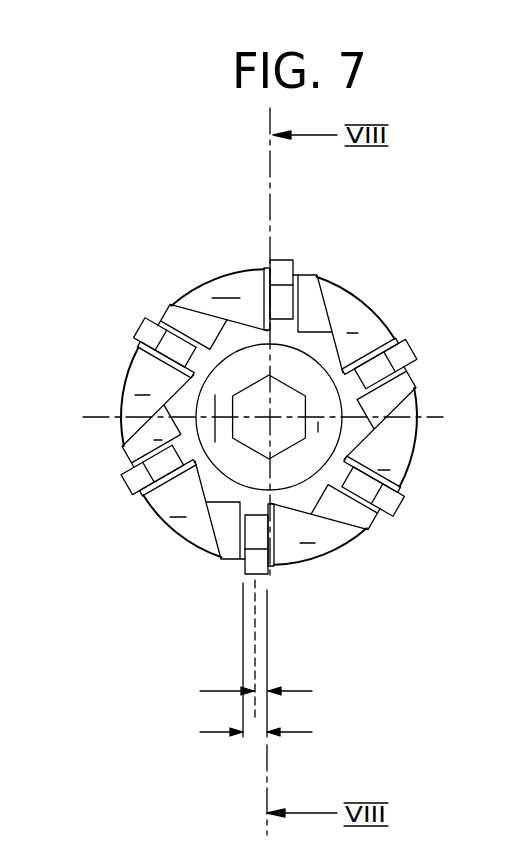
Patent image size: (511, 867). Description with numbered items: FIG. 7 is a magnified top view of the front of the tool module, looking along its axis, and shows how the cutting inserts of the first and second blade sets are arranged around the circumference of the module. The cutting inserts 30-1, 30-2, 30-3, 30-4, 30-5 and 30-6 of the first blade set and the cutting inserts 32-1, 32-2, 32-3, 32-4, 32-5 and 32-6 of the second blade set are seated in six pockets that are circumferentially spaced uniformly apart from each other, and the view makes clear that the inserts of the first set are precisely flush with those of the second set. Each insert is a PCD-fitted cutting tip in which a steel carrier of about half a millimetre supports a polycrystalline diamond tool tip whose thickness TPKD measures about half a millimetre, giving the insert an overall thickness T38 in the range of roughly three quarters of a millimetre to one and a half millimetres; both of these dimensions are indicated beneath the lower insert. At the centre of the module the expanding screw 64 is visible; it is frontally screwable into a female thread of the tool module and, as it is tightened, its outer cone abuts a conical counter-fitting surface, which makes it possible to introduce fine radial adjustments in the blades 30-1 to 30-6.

The cutting insert 30-1 is at (258, 532).
The cutting insert 30-2 is at (358, 482).
The cutting insert 30-3 is at (373, 370).
The cutting insert 30-4 is at (285, 305).
The cutting insert 30-5 is at (177, 352).
The cutting insert 30-6 is at (160, 465).
The cutting insert 32-1 is at (257, 572).
The cutting insert 32-2 is at (382, 500).
The cutting insert 32-3 is at (408, 355).
The cutting insert 32-4 is at (281, 272).
The cutting insert 32-5 is at (150, 332).
The cutting insert 32-6 is at (137, 480).
The expanding screw 64 is at (323, 402).
The thickness of PCD tool tip TPKD is at (258, 694).
The thickness of cutting insert T38 is at (256, 736).